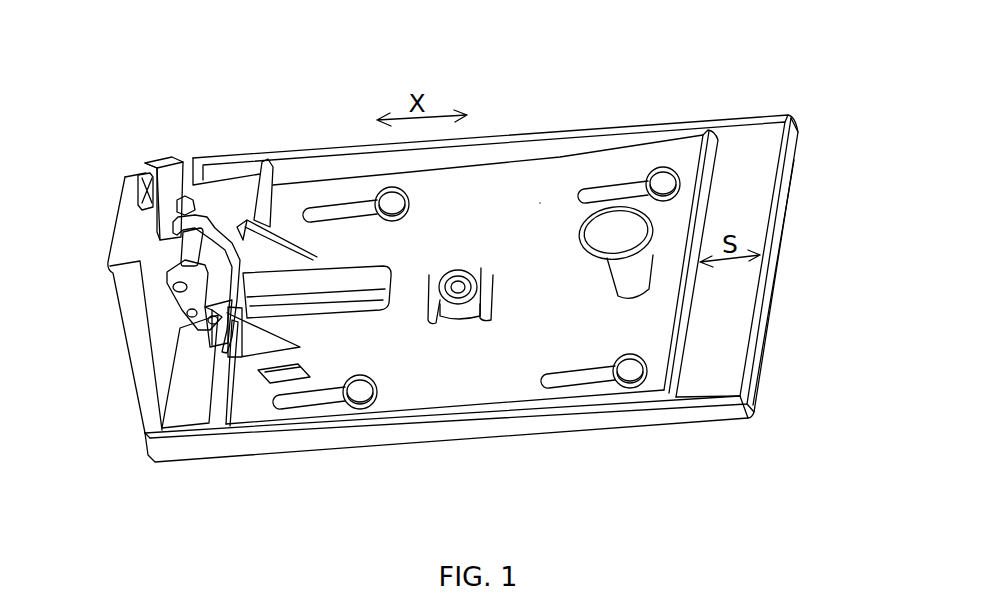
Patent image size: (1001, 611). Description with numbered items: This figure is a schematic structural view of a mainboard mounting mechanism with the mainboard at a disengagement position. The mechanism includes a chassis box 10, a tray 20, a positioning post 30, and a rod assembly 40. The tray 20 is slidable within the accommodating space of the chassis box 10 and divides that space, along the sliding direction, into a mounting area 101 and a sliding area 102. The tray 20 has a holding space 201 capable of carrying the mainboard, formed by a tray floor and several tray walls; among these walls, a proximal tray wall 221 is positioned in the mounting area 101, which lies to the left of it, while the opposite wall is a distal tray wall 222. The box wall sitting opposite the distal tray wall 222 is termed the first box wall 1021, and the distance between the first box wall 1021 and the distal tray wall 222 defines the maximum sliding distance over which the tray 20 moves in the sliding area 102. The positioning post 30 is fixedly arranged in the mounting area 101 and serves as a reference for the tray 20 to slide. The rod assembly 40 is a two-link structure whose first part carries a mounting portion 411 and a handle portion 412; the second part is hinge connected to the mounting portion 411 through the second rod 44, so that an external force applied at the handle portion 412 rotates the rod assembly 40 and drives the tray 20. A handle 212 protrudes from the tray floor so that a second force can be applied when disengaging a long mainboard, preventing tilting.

The chassis box 10 is at (737, 128).
The mounting area 101 is at (193, 412).
The sliding area 102 is at (702, 365).
The first box wall 1021 is at (758, 287).
The tray 20 is at (575, 292).
The holding space 201 is at (540, 203).
The handle 212 is at (623, 233).
The proximal tray wall 221 is at (233, 393).
The distal tray wall 222 is at (687, 307).
The positioning post 30 is at (268, 240).
The rod assembly 40 is at (212, 247).
The mounting portion 411 is at (178, 262).
The handle portion 412 is at (148, 173).
The second rod 44 is at (182, 253).